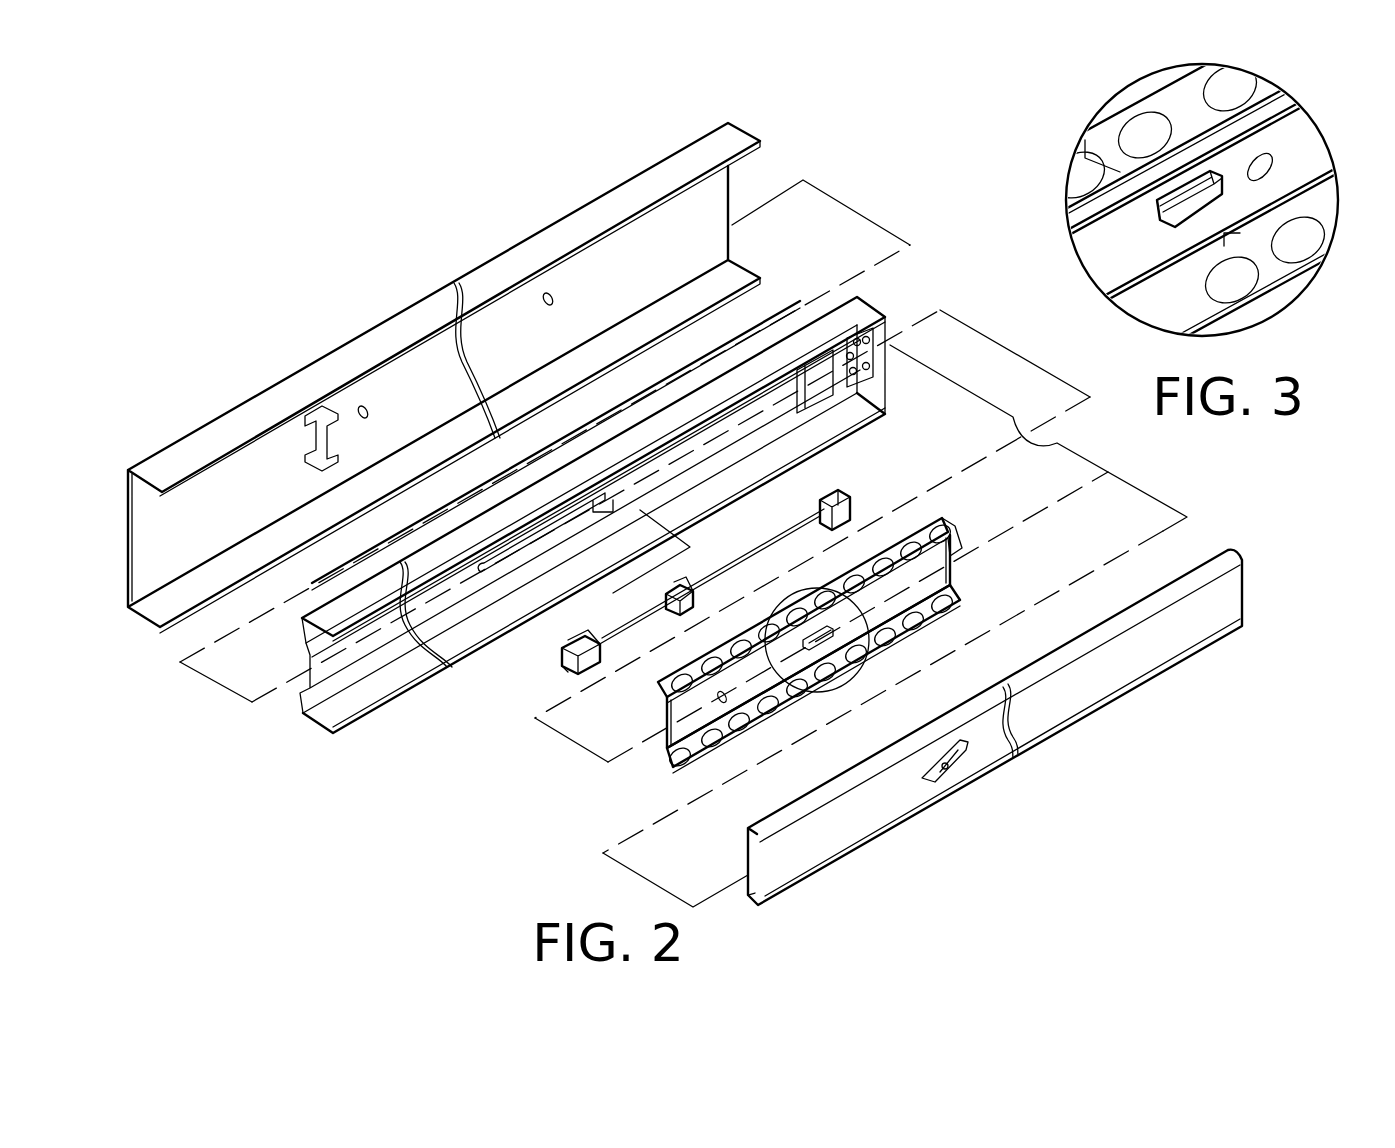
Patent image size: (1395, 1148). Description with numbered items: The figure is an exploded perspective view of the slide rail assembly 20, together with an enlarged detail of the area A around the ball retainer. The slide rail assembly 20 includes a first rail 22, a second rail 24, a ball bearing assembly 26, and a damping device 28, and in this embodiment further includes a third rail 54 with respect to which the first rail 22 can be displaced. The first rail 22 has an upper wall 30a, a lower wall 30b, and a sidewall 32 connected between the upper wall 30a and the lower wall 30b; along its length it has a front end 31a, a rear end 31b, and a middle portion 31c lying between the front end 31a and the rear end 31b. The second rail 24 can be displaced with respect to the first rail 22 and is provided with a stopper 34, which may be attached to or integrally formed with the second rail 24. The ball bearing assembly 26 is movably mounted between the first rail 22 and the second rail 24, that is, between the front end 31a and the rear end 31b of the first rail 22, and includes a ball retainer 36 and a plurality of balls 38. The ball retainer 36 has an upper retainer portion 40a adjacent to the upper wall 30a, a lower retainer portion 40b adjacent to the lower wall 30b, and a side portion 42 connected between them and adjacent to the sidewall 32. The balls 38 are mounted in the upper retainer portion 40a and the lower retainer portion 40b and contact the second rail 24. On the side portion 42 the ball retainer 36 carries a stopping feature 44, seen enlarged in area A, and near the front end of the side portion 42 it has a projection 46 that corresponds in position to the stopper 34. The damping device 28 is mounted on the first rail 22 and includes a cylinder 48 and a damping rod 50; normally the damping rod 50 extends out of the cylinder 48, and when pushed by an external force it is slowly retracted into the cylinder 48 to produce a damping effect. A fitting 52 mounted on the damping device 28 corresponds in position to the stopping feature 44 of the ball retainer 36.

In FIG. 2, the slide rail assembly 20 is at (915, 196).
In FIG. 2, the first rail 22 is at (316, 740).
In FIG. 2, the second rail 24 is at (995, 736).
In FIG. 2, the ball bearing assembly 26 is at (650, 760).
In FIG. 2, the damping device 28 is at (848, 490).
In FIG. 2, the upper wall 30a is at (335, 612).
In FIG. 2, the lower wall 30b is at (383, 700).
In FIG. 2, the front end 31a is at (868, 303).
In FIG. 2, the rear end 31b is at (303, 633).
In FIG. 2, the middle portion 31c is at (770, 400).
In FIG. 2, the sidewall 32 is at (560, 529).
In FIG. 2, the stopper 34 is at (938, 790).
In FIG. 2, the ball retainer 36 is at (804, 657).
In FIG. 3, the ball retainer 36 is at (1205, 203).
In FIG. 2, the balls 38 is at (742, 722).
In FIG. 3, the balls 38 is at (1237, 82).
In FIG. 2, the upper retainer portion 40a is at (940, 535).
In FIG. 3, the upper retainer portion 40a is at (1167, 103).
In FIG. 2, the lower retainer portion 40b is at (955, 614).
In FIG. 3, the lower retainer portion 40b is at (1323, 213).
In FIG. 2, the side portion 42 is at (841, 641).
In FIG. 3, the side portion 42 is at (1201, 203).
In FIG. 2, the stopping feature 44 is at (822, 628).
In FIG. 3, the stopping feature 44 is at (1187, 207).
In FIG. 2, the projection 46 is at (958, 546).
In FIG. 2, the cylinder 48 is at (753, 552).
In FIG. 2, the damping rod 50 is at (625, 630).
In FIG. 2, the fitting 52 is at (566, 650).
In FIG. 2, the third rail 54 is at (135, 540).
In FIG. 2, the area A is at (845, 680).